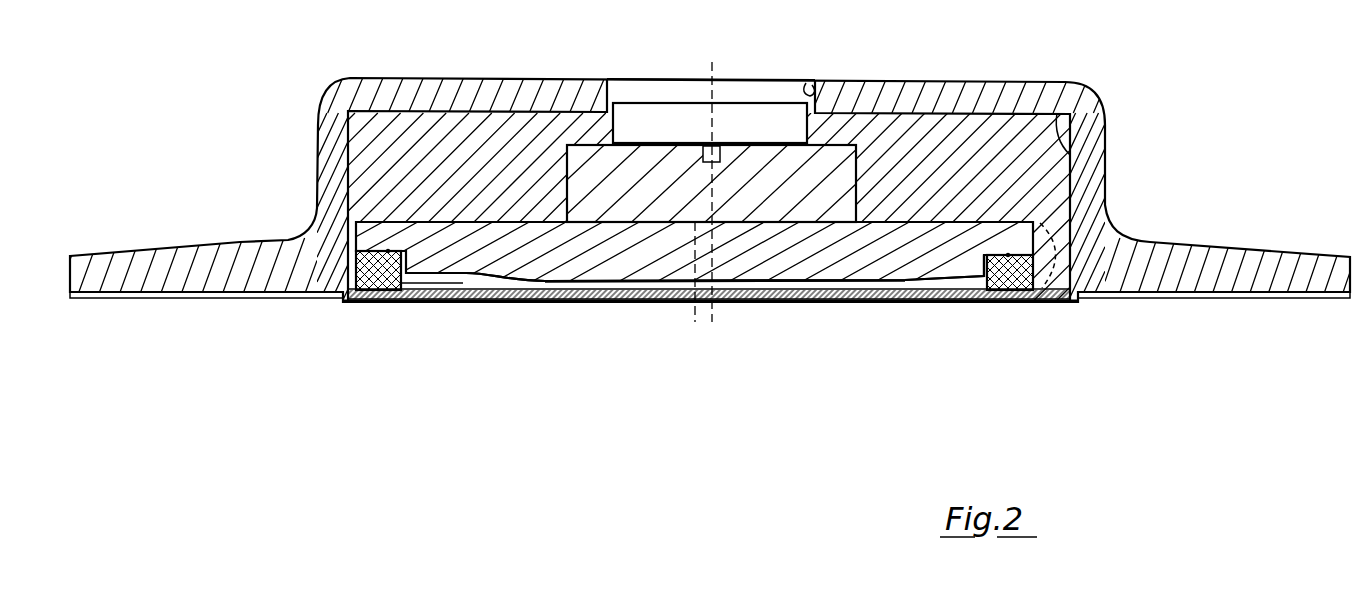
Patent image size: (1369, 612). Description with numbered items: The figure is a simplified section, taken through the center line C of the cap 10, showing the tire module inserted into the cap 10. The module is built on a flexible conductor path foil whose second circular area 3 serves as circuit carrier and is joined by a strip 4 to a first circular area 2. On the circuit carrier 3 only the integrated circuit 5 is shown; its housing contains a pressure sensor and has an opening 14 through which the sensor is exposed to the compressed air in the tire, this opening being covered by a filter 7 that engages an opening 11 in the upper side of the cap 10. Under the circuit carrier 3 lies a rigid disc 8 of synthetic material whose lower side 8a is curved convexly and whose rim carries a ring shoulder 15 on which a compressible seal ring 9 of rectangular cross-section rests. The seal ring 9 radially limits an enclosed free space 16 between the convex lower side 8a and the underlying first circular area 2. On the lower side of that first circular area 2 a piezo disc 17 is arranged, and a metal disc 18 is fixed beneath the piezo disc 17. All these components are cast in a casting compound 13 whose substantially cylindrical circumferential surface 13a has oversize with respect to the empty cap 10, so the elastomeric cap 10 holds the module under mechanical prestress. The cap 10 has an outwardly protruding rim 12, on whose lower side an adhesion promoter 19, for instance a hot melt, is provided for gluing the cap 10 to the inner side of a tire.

The first circular area 2 is at (417, 285).
The second circular area 3 is at (487, 218).
The strip 4 is at (1058, 250).
The integrated circuit 5 is at (790, 195).
The filter 7 is at (644, 117).
The circular disc of synthetic material 8 is at (893, 252).
The lower side 8a is at (930, 280).
The compressible seal ring 9 is at (364, 291).
The cap 10 is at (983, 88).
The opening 11 is at (785, 51).
The rim 12 is at (208, 248).
The casting compound 13 is at (1043, 133).
The circumferential surface 13a is at (1072, 108).
The opening 14 is at (708, 148).
The ring shoulder 15 is at (388, 253).
The free space 16 is at (463, 285).
The piezo disc 17 is at (600, 291).
The metal disc 18 is at (642, 302).
The adhesion promoter 19 is at (207, 296).
The center line C is at (705, 62).